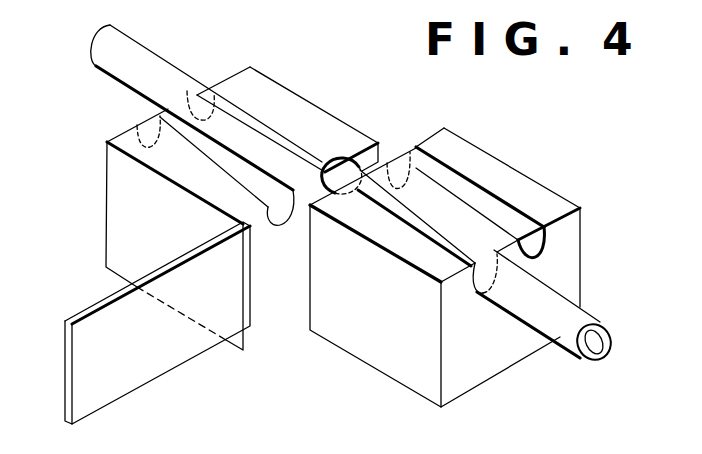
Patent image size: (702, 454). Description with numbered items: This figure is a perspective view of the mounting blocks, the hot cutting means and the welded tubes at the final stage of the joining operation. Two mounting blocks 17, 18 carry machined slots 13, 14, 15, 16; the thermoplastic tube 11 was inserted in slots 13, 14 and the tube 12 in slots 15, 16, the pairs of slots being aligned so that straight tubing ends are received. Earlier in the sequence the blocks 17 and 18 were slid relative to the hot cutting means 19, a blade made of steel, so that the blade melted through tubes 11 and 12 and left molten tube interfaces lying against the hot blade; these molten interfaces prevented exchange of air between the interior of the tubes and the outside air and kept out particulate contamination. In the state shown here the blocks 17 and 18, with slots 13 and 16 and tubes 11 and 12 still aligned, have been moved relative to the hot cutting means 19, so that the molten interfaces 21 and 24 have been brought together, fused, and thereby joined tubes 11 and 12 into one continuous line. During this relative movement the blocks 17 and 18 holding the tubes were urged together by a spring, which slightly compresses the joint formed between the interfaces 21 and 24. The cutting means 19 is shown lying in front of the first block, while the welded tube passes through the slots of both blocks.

The thermoplastic tube 11 is at (99, 45).
The tube 12 is at (596, 318).
The slot 13 is at (219, 100).
The slot 14 is at (530, 226).
The slot 15 is at (168, 112).
The slot 16 is at (460, 253).
The block 17 is at (322, 108).
The block 18 is at (500, 161).
The hot cutting means 19 is at (143, 351).
The molten tube interface 21 is at (338, 161).
The molten tube interface 24 is at (349, 178).